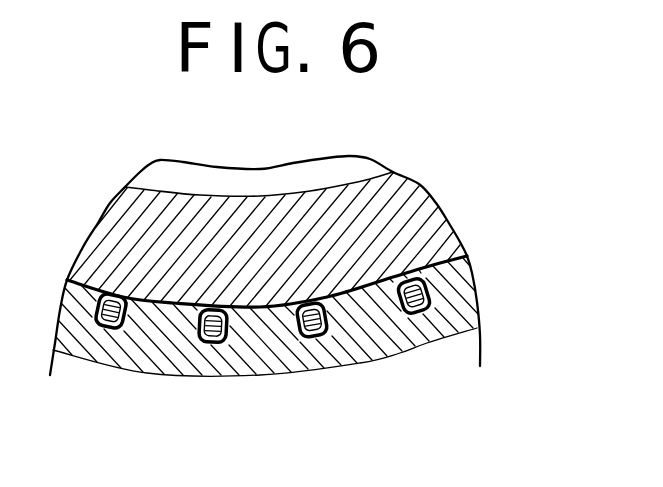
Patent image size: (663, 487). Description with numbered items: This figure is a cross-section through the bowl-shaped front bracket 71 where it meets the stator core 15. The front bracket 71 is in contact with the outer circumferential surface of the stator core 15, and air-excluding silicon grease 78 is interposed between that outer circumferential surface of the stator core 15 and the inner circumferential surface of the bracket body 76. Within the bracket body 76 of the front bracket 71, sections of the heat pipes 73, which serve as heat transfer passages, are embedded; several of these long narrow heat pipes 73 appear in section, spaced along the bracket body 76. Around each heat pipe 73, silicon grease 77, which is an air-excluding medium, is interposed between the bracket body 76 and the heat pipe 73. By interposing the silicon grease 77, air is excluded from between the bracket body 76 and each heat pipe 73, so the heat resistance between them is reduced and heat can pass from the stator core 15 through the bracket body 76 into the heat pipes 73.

The stator core 15 is at (421, 189).
The air-excluding silicon grease 78 is at (468, 256).
The heat pipe 73 is at (111, 329).
The front bracket 71 is at (442, 310).
The silicon grease 77 is at (215, 343).
The bracket body 76 is at (373, 343).